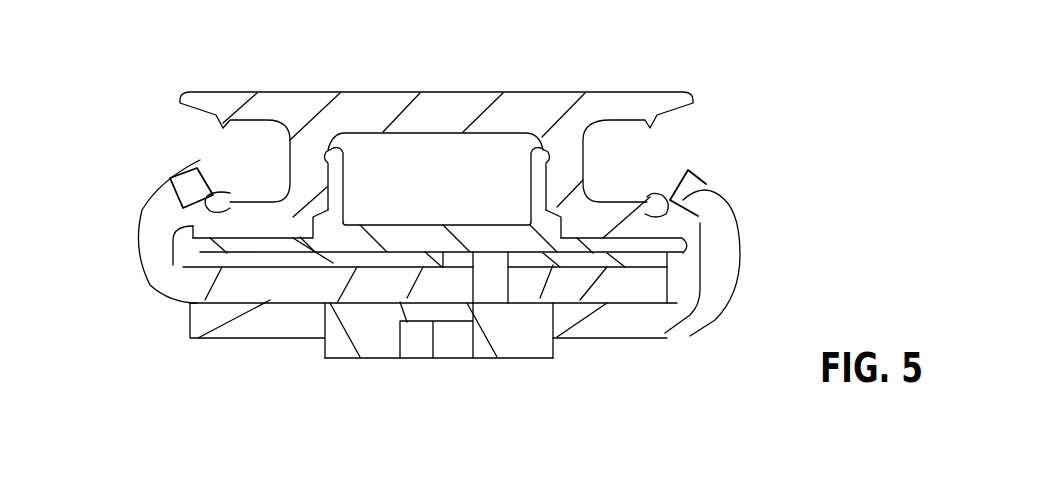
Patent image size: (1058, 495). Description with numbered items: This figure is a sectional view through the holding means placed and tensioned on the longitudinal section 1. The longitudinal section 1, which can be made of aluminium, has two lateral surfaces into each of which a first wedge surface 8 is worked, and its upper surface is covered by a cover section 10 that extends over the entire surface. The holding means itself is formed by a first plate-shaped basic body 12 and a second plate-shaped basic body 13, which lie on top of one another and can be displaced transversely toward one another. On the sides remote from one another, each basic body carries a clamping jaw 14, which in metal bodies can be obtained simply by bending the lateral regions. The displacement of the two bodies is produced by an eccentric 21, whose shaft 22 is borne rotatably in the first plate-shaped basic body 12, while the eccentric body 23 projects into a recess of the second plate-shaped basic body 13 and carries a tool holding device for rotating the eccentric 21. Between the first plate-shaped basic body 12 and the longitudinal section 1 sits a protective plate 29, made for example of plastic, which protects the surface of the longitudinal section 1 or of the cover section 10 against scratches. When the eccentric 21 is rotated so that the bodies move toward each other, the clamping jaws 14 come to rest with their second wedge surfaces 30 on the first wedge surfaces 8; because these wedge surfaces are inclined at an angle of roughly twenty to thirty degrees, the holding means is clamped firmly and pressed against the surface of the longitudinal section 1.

The longitudinal section 1 is at (547, 100).
The first wedge surface 8 is at (240, 196).
The cover section 10 is at (415, 237).
The first plate-shaped basic body 12 is at (182, 290).
The second plate-shaped basic body 13 is at (662, 330).
The clamping jaw 14 is at (153, 248).
The eccentric 21 is at (362, 358).
The rotational axis or shaft 22 is at (490, 278).
The eccentric body 23 is at (340, 350).
The protective plate 29 is at (285, 258).
The second wedge surface 30 is at (185, 168).